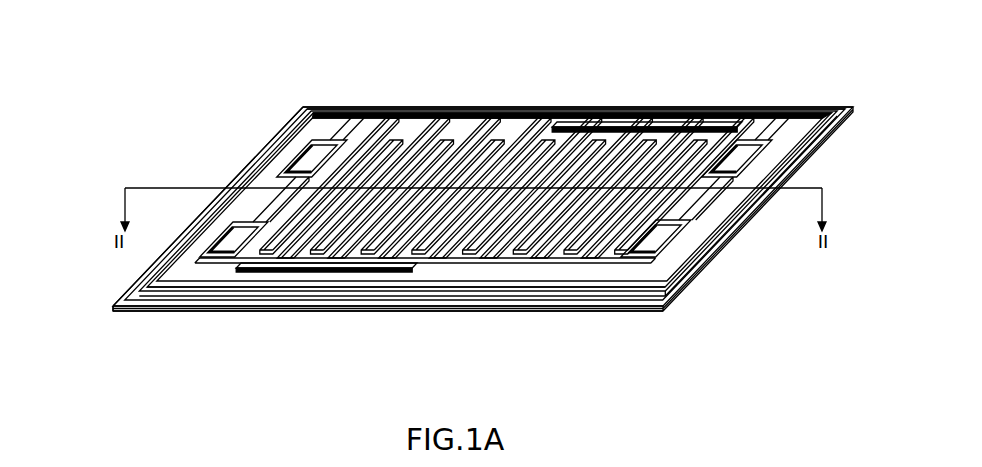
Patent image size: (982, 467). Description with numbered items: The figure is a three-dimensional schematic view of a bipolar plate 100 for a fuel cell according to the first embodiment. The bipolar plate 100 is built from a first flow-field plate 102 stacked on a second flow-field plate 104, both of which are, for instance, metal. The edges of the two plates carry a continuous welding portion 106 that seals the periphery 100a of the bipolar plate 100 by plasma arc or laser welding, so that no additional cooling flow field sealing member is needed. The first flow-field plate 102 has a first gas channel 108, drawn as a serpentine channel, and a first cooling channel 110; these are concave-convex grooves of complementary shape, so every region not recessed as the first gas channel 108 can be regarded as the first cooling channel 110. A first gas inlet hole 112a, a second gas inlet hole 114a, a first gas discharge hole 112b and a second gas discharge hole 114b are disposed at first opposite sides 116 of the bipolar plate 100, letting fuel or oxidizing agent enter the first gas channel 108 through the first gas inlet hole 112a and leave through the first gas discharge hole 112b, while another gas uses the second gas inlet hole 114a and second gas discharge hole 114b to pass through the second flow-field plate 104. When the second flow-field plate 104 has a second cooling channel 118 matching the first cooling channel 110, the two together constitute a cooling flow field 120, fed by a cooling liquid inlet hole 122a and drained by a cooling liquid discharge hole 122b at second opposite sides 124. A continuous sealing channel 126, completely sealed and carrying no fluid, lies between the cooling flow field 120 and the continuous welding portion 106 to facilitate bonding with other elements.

The bipolar plate 100 is at (280, 78).
The periphery 100a is at (113, 306).
The first flow-field plate 102 is at (853, 106).
The second flow-field plate 104 is at (841, 120).
The continuous welding portion 106 is at (543, 308).
The first gas channel 108 is at (458, 148).
The first cooling channel 110 is at (247, 266).
The first gas inlet hole 112a is at (304, 150).
The first gas discharge hole 112b is at (675, 237).
The second gas inlet hole 114a is at (223, 240).
The second gas discharge hole 114b is at (745, 140).
The first opposite sides 116 is at (240, 170).
The second cooling channel 118 is at (360, 270).
The cooling flow field 120 is at (388, 122).
The cooling liquid inlet hole 122a is at (415, 266).
The cooling liquid discharge hole 122b is at (560, 126).
The second opposite sides 124 is at (636, 103).
The continuous sealing channel 126 is at (339, 108).